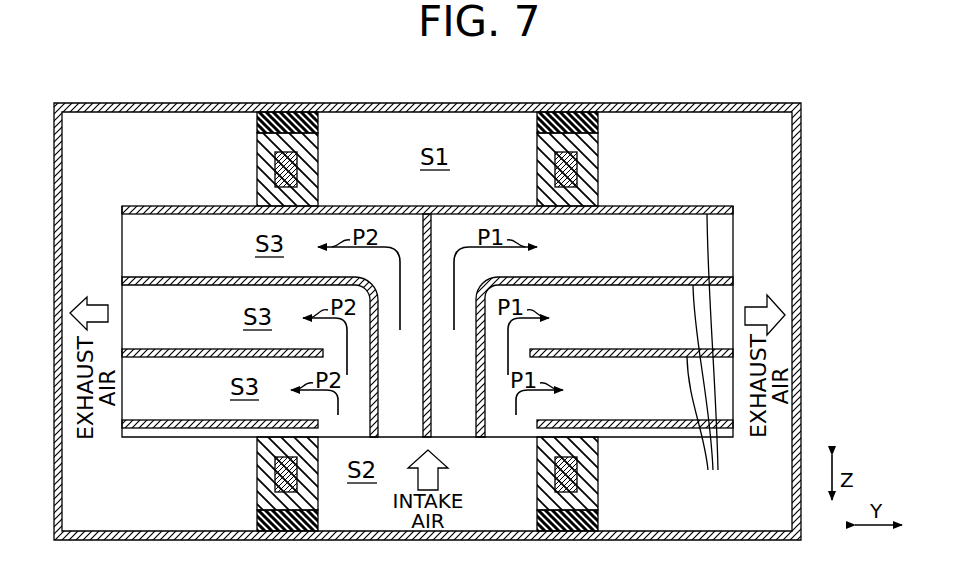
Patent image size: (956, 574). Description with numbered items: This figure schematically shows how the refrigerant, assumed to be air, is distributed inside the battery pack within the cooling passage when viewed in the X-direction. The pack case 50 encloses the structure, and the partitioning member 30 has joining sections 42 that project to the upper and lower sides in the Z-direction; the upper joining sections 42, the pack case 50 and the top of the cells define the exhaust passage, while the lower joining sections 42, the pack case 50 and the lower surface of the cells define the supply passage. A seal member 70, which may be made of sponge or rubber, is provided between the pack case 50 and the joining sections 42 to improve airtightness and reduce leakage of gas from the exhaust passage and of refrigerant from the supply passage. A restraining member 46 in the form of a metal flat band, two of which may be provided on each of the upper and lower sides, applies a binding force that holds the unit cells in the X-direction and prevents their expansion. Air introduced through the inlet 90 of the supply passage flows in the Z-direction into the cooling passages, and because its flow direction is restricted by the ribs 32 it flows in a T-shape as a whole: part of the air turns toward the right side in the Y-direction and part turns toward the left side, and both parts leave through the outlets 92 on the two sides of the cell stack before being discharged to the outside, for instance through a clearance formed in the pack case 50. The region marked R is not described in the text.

The partitioning member 30 is at (728, 204).
The ribs 32 is at (707, 355).
The joining sections 42 is at (265, 148).
The restraining member 46 is at (276, 175).
The pack case 50 is at (801, 150).
The seal member 70 is at (257, 122).
The inlet 90 is at (473, 446).
The outlets 92 is at (110, 268).
The region R is at (162, 400).